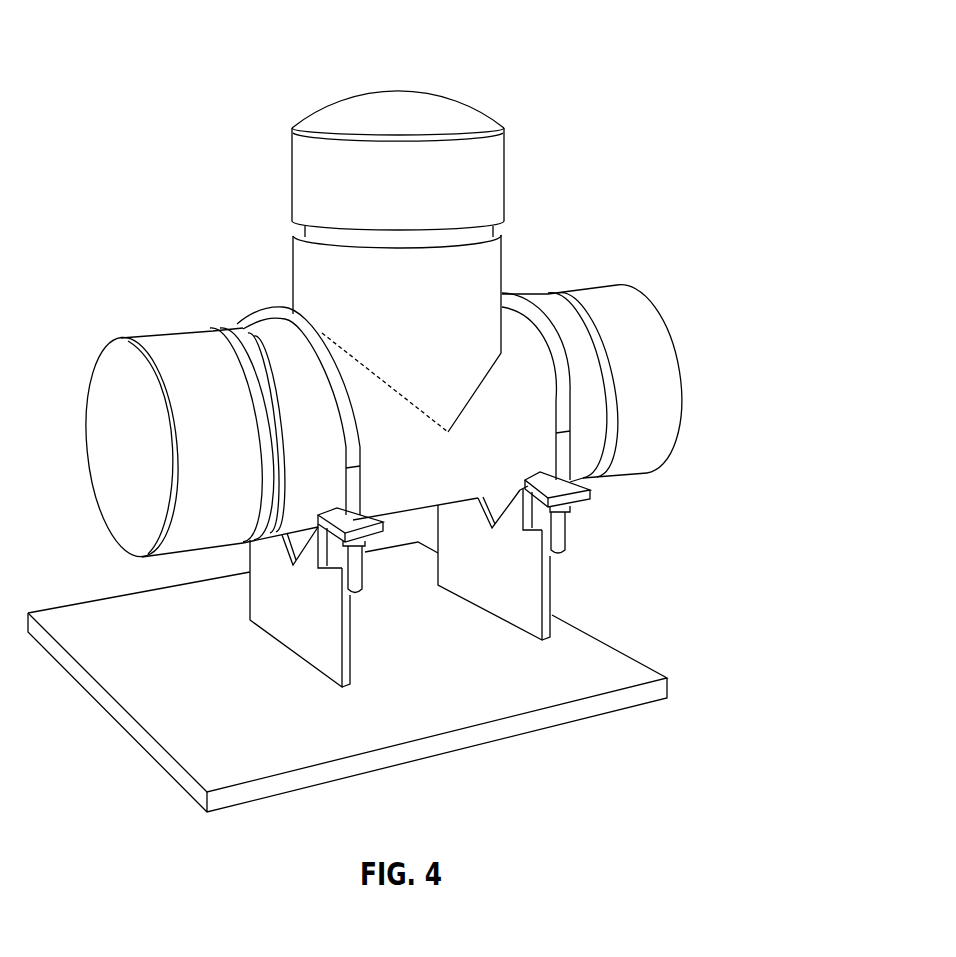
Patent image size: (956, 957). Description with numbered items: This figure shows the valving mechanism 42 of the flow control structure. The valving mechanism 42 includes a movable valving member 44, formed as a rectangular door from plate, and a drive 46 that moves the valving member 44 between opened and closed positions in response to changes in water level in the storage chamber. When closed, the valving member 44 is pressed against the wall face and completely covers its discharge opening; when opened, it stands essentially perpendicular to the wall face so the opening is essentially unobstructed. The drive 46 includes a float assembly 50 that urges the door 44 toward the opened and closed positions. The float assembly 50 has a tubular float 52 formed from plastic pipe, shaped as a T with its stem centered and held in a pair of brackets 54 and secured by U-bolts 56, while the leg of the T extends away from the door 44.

The valving mechanism 42 is at (539, 79).
The valving member 44 is at (525, 721).
The drive 46 is at (168, 335).
The float assembly 50 is at (570, 536).
The tubular float 52 is at (502, 257).
The brackets 54 is at (313, 645).
The U-bolts 56 is at (362, 423).